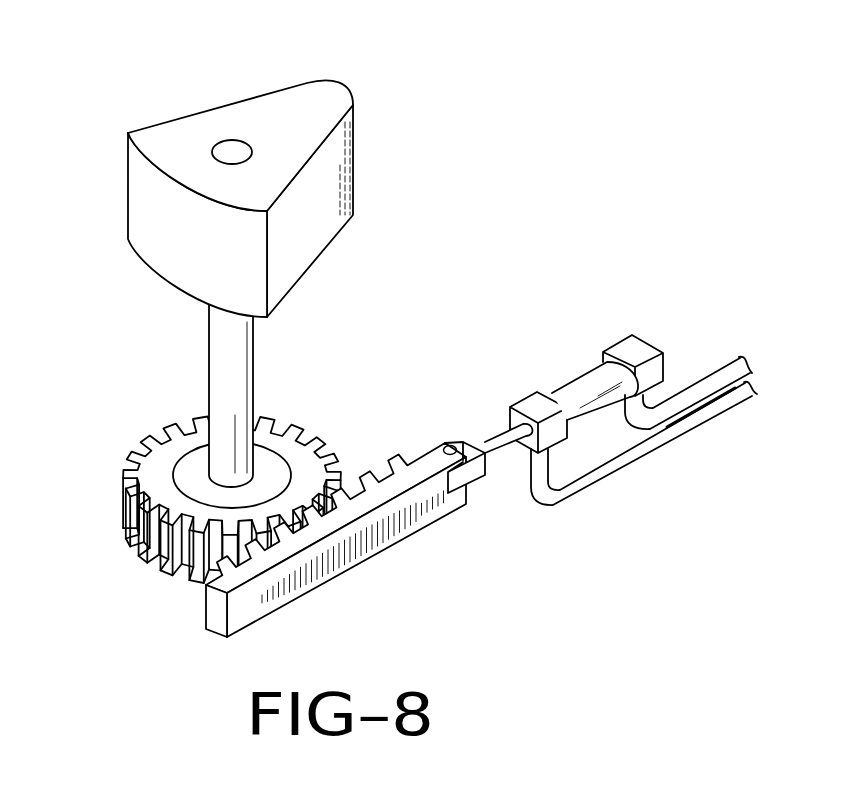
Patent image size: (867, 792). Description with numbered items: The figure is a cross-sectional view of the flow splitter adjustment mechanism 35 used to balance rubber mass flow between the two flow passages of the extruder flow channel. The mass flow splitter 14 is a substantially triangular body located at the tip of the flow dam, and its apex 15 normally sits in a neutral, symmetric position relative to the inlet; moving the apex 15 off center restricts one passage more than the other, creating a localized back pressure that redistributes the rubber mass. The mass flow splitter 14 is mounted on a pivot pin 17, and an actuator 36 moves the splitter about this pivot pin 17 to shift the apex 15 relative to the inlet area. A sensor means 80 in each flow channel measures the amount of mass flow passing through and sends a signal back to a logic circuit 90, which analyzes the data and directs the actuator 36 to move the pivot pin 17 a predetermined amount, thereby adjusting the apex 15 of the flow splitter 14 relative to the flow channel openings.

The mass flow splitter 14 is at (253, 186).
The apex 15 is at (347, 90).
The pivot pin 17 is at (235, 152).
The flow splitter adjustment mechanism 35 is at (140, 605).
The actuator 36 is at (572, 393).
The sensor means 80 is at (646, 434).
The logic circuit 90 is at (683, 422).